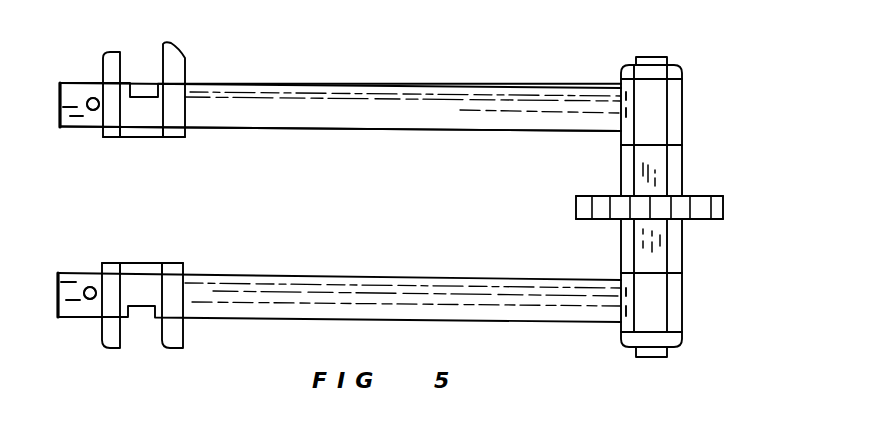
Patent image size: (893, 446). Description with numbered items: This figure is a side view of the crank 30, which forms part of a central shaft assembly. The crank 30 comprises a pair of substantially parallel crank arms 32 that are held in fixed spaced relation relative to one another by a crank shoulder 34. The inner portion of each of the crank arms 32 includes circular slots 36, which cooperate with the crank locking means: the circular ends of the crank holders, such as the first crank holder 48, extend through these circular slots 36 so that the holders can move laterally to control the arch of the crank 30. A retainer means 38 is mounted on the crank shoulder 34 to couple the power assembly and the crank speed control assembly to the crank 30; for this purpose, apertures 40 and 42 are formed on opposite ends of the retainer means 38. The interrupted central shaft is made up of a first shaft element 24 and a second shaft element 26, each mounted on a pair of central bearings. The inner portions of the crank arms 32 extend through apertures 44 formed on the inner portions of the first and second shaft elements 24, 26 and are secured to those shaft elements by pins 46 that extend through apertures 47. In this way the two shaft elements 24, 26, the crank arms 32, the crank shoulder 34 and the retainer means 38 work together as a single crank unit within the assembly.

The first shaft element 24 is at (110, 263).
The second shaft element 26 is at (105, 88).
The crank 30 is at (379, 81).
The crank arms 32 is at (482, 88).
The crank shoulder 34 is at (682, 168).
The circular slots 36 is at (142, 87).
The retainer means 38 is at (723, 203).
The aperture 40 is at (694, 218).
The aperture 42 is at (598, 196).
The apertures 44 is at (153, 125).
The pins 46 is at (93, 108).
The apertures 47 is at (93, 98).
The first crank holder 48 is at (92, 300).